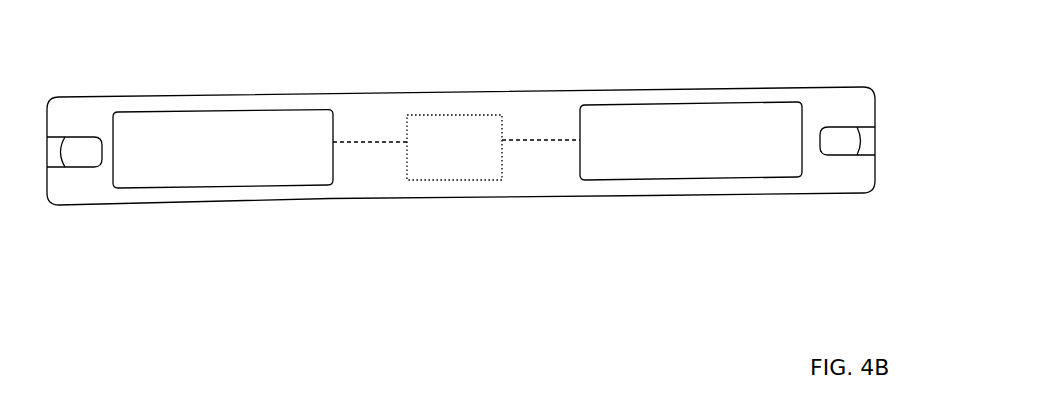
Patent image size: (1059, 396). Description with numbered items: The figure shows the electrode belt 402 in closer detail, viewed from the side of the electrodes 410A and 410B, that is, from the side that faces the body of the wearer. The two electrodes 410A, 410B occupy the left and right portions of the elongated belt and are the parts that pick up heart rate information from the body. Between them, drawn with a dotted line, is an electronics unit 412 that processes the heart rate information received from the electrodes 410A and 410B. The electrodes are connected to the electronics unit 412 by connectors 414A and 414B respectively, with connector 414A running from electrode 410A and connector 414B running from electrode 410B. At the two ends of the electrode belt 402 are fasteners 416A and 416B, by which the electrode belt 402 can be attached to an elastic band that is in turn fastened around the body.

The electrode belt 402 is at (512, 198).
The electrode 410A is at (257, 164).
The electrode 410B is at (727, 156).
The electronics unit 412 is at (485, 160).
The connector 414A is at (358, 142).
The connector 414B is at (530, 140).
The fastener 416A is at (828, 147).
The fastener 416B is at (78, 152).